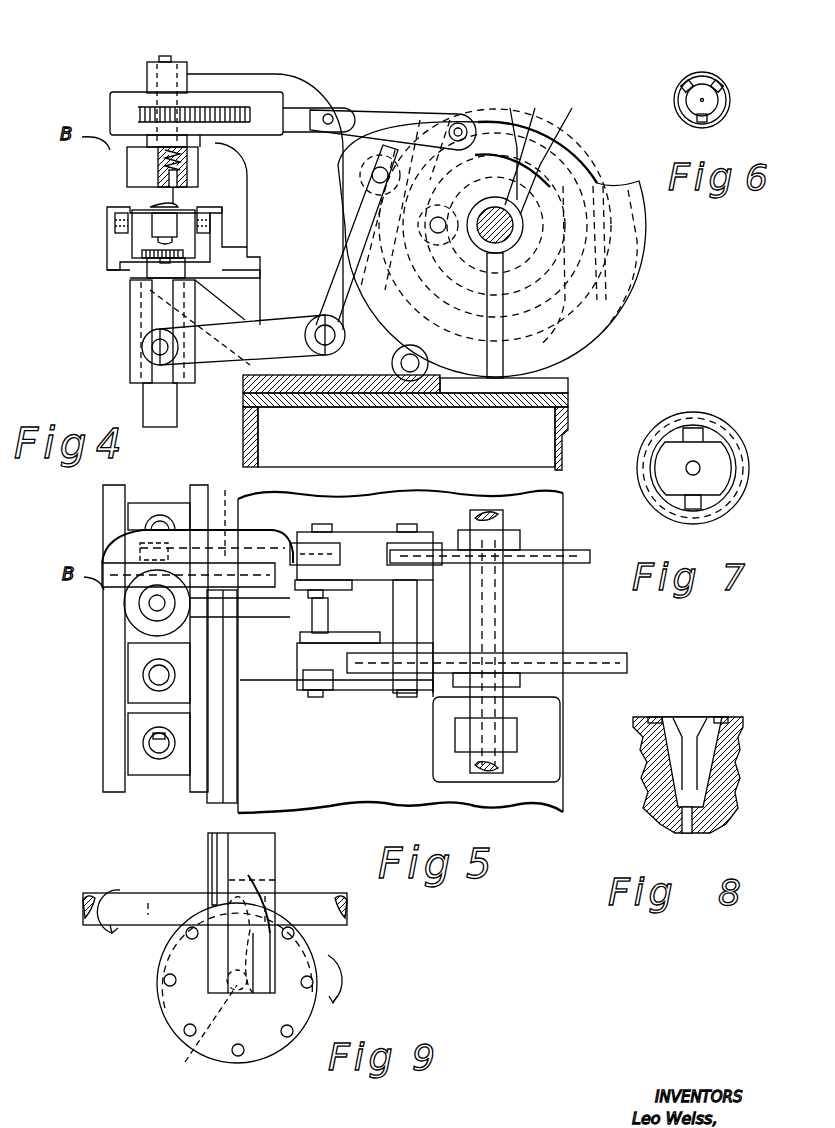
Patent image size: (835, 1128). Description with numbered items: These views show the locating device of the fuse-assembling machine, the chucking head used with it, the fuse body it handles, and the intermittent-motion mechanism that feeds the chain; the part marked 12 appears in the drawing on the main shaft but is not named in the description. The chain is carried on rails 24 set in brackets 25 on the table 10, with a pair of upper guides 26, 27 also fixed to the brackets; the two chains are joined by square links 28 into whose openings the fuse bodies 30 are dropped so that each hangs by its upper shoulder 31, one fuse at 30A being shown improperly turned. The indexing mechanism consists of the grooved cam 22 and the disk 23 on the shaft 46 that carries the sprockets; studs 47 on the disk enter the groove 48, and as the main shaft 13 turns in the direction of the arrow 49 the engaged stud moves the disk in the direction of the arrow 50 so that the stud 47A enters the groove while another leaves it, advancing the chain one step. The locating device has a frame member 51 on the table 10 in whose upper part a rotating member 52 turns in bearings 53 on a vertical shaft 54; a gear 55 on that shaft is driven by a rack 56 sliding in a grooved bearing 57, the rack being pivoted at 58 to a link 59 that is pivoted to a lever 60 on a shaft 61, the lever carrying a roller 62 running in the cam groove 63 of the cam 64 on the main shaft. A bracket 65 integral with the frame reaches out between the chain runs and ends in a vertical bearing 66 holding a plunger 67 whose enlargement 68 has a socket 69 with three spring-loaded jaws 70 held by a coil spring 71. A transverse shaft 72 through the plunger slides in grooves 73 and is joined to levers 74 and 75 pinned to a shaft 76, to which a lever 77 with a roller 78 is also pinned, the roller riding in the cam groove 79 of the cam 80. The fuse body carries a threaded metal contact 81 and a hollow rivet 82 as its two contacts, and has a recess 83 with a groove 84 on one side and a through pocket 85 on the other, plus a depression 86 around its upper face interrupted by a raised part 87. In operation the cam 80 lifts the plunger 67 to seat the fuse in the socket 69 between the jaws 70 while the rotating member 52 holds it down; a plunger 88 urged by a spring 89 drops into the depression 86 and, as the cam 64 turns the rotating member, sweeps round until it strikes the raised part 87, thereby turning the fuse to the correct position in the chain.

In FIG. 4, the table 10 is at (570, 414).
In FIG. 5, the table 10 is at (400, 651).
In FIG. 4, the cam 12 is at (560, 172).
In FIG. 5, the cam 12 is at (520, 735).
In FIG. 4, the main shaft 13 is at (515, 165).
In FIG. 5, the main shaft 13 is at (486, 641).
In FIG. 9, the main shaft 13 is at (350, 915).
In FIG. 9, the grooved cam 22 is at (272, 848).
In FIG. 9, the disk 23 is at (158, 1008).
In FIG. 4, the rails 24 is at (115, 230).
In FIG. 4, the brackets 25 is at (110, 270).
In FIG. 4, the upper guide 26 is at (213, 211).
In FIG. 5, the upper guide 26 is at (208, 740).
In FIG. 4, the upper guide 27 is at (112, 207).
In FIG. 5, the upper guide 27 is at (103, 682).
In FIG. 4, the square links 28 is at (140, 205).
In FIG. 5, the square links 28 is at (165, 503).
In FIG. 4, the fuse body 30 is at (164, 228).
In FIG. 5, the fuse body 30 is at (156, 506).
In FIG. 7, the fuse body 30 is at (745, 488).
In FIG. 8, the fuse body 30 is at (737, 760).
In FIG. 5, the improperly inserted fuse 30A is at (144, 683).
In FIG. 4, the upper shoulder 31 is at (180, 205).
In FIG. 8, the upper shoulder 31 is at (638, 735).
In FIG. 9, the shaft 46 is at (236, 999).
In FIG. 9, the studs 47 is at (288, 1037).
In FIG. 9, the stud 47A is at (188, 937).
In FIG. 9, the groove 48 is at (210, 880).
In FIG. 9, the arrow 49 is at (118, 898).
In FIG. 9, the arrow 50 is at (334, 978).
In FIG. 4, the frame member 51 is at (225, 202).
In FIG. 5, the frame member 51 is at (262, 545).
In FIG. 4, the rotating member 52 is at (162, 167).
In FIG. 5, the rotating member 52 is at (130, 612).
In FIG. 4, the bearings 53 is at (147, 75).
In FIG. 4, the vertical shaft 54 is at (172, 58).
In FIG. 5, the vertical shaft 54 is at (150, 604).
In FIG. 4, the gear 55 is at (150, 112).
In FIG. 4, the rack 56 is at (240, 107).
In FIG. 5, the rack 56 is at (345, 590).
In FIG. 4, the grooved bearing 57 is at (207, 96).
In FIG. 4, the pivot 58 is at (330, 113).
In FIG. 4, the link 59 is at (383, 117).
In FIG. 5, the link 59 is at (365, 575).
In FIG. 4, the lever 60 is at (507, 145).
In FIG. 5, the lever 60 is at (438, 575).
In FIG. 4, the shaft 61 is at (410, 372).
In FIG. 5, the shaft 61 is at (400, 627).
In FIG. 4, the roller 62 is at (530, 147).
In FIG. 5, the roller 62 is at (443, 545).
In FIG. 4, the cam groove 63 is at (553, 152).
In FIG. 5, the cam groove 63 is at (545, 565).
In FIG. 4, the cam 64 is at (580, 148).
In FIG. 5, the cam 64 is at (540, 550).
In FIG. 4, the bracket 65 is at (217, 380).
In FIG. 5, the bracket 65 is at (222, 696).
In FIG. 4, the vertical bearing 66 is at (135, 312).
In FIG. 4, the plunger 67 is at (169, 353).
In FIG. 4, the enlargement 68 is at (150, 268).
In FIG. 6, the enlargement 68 is at (712, 75).
In FIG. 6, the socket 69 is at (713, 108).
In FIG. 4, the jaws 70 is at (185, 264).
In FIG. 6, the jaws 70 is at (683, 85).
In FIG. 4, the coil spring 71 is at (142, 254).
In FIG. 6, the coil spring 71 is at (676, 104).
In FIG. 4, the shaft 72 is at (150, 355).
In FIG. 4, the grooves 73 is at (150, 325).
In FIG. 4, the lever 74 is at (237, 322).
In FIG. 5, the lever 74 is at (225, 689).
In FIG. 5, the lever 75 is at (227, 520).
In FIG. 4, the shaft 76 is at (325, 345).
In FIG. 5, the shaft 76 is at (330, 625).
In FIG. 4, the lever 77 is at (332, 276).
In FIG. 5, the lever 77 is at (312, 640).
In FIG. 4, the roller 78 is at (370, 178).
In FIG. 5, the roller 78 is at (365, 665).
In FIG. 4, the cam groove 79 is at (440, 125).
In FIG. 5, the cam groove 79 is at (534, 665).
In FIG. 4, the cam 80 is at (630, 285).
In FIG. 5, the cam 80 is at (627, 660).
In FIG. 7, the threaded metal contact 81 is at (700, 515).
In FIG. 8, the threaded metal contact 81 is at (645, 788).
In FIG. 7, the hollow rivet 82 is at (686, 472).
In FIG. 8, the hollow rivet 82 is at (695, 833).
In FIG. 7, the recess 83 is at (722, 464).
In FIG. 8, the recess 83 is at (712, 745).
In FIG. 7, the groove 84 is at (690, 426).
In FIG. 8, the groove 84 is at (692, 730).
In FIG. 7, the pocket 85 is at (690, 502).
In FIG. 7, the depression 86 is at (655, 462).
In FIG. 8, the depression 86 is at (655, 716).
In FIG. 7, the raised part 87 is at (710, 430).
In FIG. 8, the raised part 87 is at (722, 716).
In FIG. 4, the plunger 88 is at (180, 178).
In FIG. 4, the spring 89 is at (188, 160).